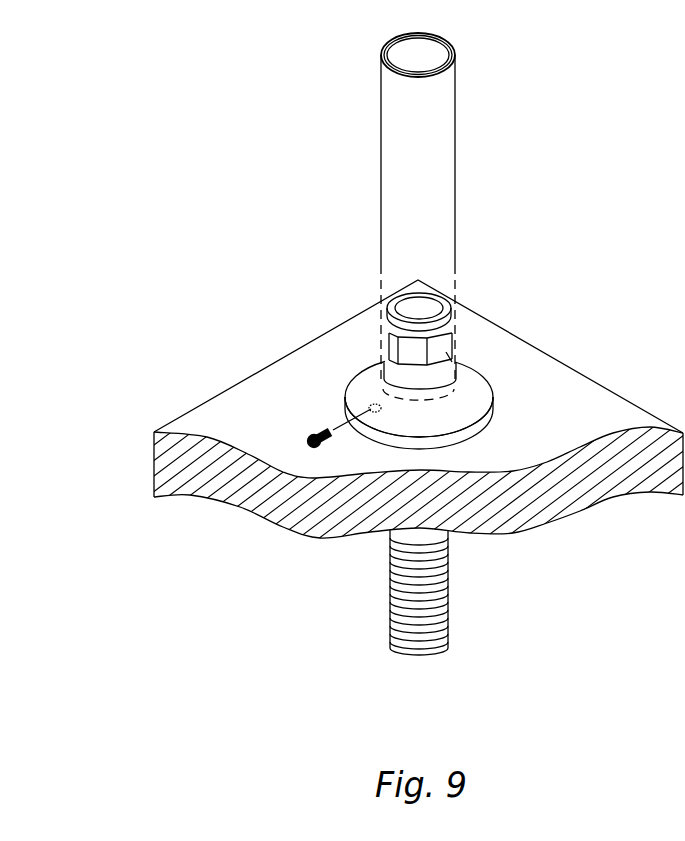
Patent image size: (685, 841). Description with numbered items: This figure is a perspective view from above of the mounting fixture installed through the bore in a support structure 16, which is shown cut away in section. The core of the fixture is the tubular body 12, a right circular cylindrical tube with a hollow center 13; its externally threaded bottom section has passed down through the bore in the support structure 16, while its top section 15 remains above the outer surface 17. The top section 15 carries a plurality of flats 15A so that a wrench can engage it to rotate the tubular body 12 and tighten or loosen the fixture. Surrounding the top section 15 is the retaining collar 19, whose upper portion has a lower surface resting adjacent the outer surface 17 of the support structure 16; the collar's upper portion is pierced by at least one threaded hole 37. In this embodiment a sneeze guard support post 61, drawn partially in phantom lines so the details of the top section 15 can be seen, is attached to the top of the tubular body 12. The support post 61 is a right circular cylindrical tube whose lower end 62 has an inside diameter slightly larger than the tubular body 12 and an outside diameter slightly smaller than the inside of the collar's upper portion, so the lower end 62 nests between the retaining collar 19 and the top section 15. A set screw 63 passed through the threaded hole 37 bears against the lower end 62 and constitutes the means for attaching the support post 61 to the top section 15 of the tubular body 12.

The tubular body 12 is at (452, 618).
The hollow center 13 is at (418, 310).
The top section 15 is at (380, 341).
The plurality of flats 15A is at (440, 342).
The support structure 16 is at (152, 429).
The outer surface 17 is at (248, 405).
The retaining collar 19 is at (497, 397).
The threaded hole 37 is at (351, 414).
The sneeze guard support post 61 is at (474, 70).
The lower end 62 is at (456, 360).
The set screw 63 is at (310, 438).